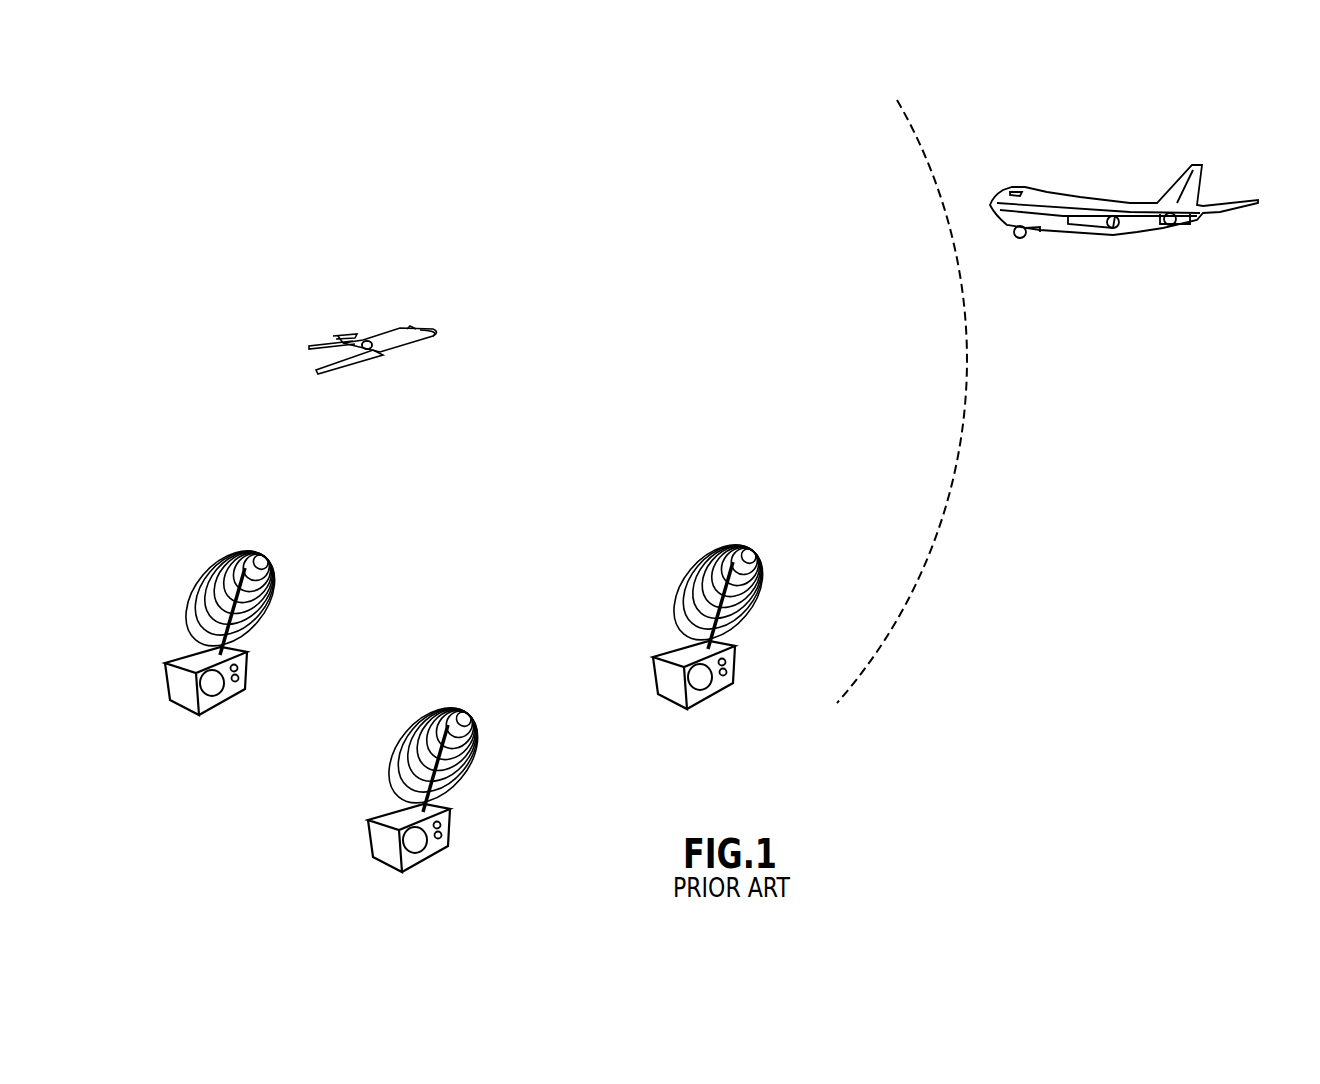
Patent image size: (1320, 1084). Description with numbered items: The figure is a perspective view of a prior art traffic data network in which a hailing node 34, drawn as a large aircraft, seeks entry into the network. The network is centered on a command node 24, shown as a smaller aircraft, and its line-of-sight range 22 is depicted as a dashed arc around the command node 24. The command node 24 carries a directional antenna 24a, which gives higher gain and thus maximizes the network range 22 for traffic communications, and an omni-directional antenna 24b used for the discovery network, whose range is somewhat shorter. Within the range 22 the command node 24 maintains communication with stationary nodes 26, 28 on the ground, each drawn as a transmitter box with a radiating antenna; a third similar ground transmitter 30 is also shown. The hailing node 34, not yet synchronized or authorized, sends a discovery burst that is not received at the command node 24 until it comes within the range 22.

The traffic network range 22 is at (965, 378).
The command node 24 is at (395, 368).
The directional antenna 24a is at (437, 333).
The omni-directional antenna 24b is at (378, 333).
The stationary node 26 is at (183, 657).
The stationary node 28 is at (670, 650).
The ground transmitter 30 is at (388, 817).
The hailing node 34 is at (1113, 252).